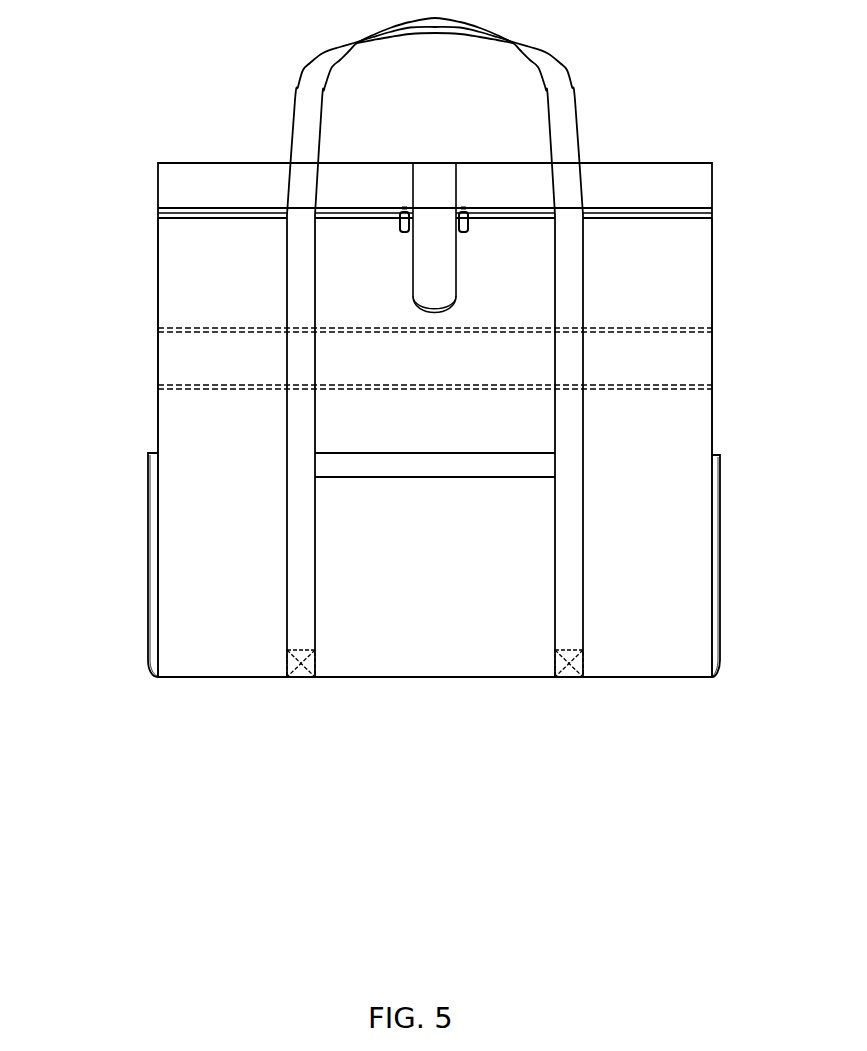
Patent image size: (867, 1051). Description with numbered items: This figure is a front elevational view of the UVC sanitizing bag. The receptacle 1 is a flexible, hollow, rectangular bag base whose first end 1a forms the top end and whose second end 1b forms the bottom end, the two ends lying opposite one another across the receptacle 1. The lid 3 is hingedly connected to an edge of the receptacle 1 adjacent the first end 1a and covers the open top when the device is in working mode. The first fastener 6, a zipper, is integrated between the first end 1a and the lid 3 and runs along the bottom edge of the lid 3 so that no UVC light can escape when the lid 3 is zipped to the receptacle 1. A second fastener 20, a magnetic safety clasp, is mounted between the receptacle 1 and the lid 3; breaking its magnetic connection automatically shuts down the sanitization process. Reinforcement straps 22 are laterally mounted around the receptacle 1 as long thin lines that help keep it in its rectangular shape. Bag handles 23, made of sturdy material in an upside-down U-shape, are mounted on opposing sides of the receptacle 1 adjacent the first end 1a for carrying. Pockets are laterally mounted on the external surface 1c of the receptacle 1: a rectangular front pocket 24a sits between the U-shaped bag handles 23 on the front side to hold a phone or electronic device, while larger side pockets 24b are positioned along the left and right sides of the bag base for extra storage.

The receptacle 1 is at (710, 430).
The first end 1a is at (156, 211).
The second end 1b is at (652, 681).
The external surface 1c is at (185, 306).
The lid 3 is at (710, 170).
The first fastener 6 is at (403, 232).
The second fastener 20 is at (445, 301).
The reinforcement straps 22 is at (708, 330).
The bag handles 23 is at (548, 78).
The front pocket 24a is at (402, 446).
The side pockets 24b is at (152, 450).